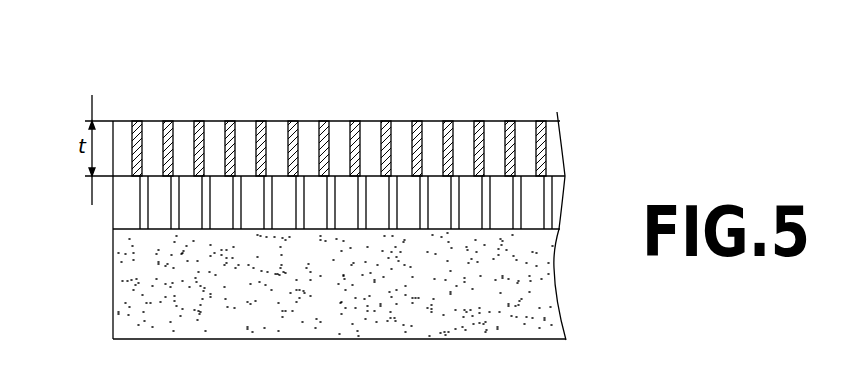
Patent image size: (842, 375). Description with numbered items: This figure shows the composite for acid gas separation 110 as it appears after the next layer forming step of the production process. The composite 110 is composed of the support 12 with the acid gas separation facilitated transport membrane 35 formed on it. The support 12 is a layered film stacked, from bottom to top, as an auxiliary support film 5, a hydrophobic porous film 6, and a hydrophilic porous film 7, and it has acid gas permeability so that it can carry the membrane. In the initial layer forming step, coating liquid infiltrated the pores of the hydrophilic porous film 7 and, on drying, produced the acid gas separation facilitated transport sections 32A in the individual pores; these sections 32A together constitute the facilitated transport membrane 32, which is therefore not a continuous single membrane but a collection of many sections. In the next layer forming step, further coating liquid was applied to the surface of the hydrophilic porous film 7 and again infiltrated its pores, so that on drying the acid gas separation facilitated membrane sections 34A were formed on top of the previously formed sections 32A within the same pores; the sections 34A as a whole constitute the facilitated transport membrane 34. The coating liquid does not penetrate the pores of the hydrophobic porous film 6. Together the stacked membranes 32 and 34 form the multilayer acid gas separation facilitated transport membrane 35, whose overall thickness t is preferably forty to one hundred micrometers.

The composite for acid gas separation 110 is at (495, 68).
The support 12 is at (67, 192).
The auxiliary support film 5 is at (120, 287).
The hydrophobic porous film 6 is at (121, 215).
The hydrophilic porous film 7 is at (120, 196).
The facilitated transport membrane 32 is at (555, 160).
The acid gas separation facilitated transport sections 32A is at (264, 160).
The facilitated transport membrane 34 is at (555, 133).
The acid gas separation facilitated membrane sections 34A is at (167, 121).
The acid gas separation facilitated transport membrane 35 is at (624, 122).